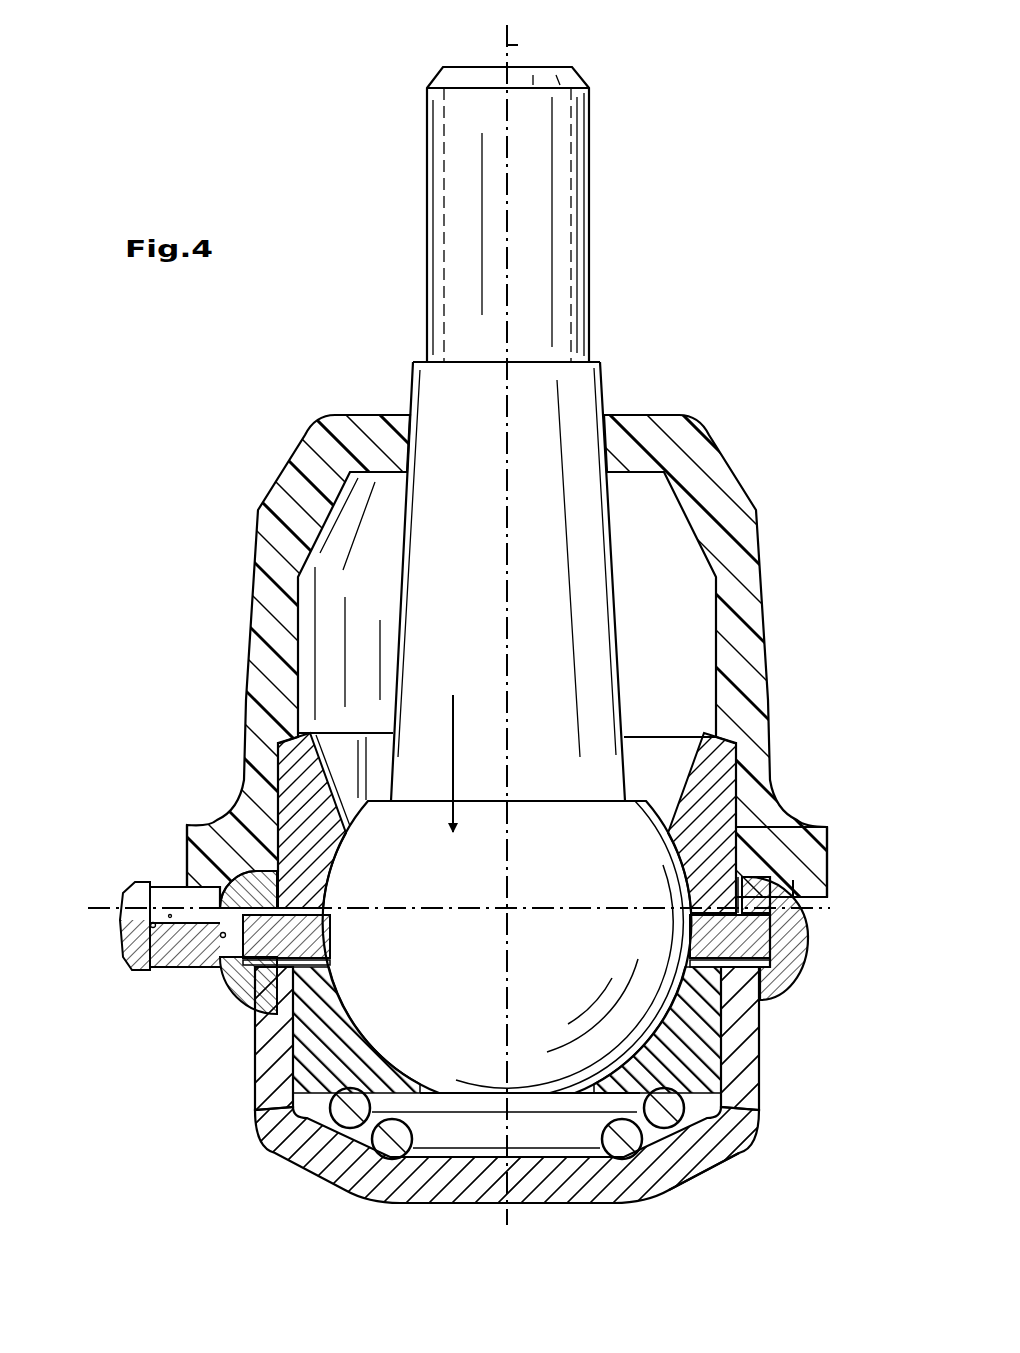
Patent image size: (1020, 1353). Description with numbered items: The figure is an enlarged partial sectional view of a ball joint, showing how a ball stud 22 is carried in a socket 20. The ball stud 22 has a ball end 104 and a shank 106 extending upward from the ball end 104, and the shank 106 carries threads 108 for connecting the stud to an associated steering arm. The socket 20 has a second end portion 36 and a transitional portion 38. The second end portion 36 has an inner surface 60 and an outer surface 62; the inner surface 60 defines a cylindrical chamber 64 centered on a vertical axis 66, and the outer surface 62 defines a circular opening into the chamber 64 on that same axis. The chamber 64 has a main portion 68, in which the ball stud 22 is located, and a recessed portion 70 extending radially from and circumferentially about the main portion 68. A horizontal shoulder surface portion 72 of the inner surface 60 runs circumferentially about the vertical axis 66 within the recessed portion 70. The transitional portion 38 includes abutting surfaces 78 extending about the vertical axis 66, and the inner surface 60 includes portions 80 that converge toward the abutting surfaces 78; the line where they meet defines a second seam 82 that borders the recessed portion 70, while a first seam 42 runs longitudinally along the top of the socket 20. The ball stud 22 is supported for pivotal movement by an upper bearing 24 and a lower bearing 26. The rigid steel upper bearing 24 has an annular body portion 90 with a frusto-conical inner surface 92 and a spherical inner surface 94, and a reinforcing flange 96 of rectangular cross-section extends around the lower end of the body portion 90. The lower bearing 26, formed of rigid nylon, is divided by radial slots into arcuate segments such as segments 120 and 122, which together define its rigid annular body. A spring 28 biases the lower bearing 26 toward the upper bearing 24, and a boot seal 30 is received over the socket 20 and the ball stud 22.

The socket 20 is at (470, 678).
The ball stud 22 is at (489, 548).
The upper bearing 24 is at (732, 748).
The lower bearing 26 is at (718, 1053).
The spring 28 is at (358, 1175).
The boot seal 30 is at (728, 512).
The second end portion 36 is at (748, 1147).
The transitional portion 38 is at (115, 948).
The first seam 42 is at (112, 871).
The inner surface 60 is at (296, 1030).
The outer surface 62 is at (763, 870).
The cylindrical chamber 64 is at (453, 748).
The vertical axis 66 is at (510, 45).
The main portion 68 is at (447, 963).
The recessed portion 70 is at (718, 941).
The horizontal shoulder surface portion 72 is at (782, 952).
The abutting surfaces 78 is at (170, 915).
The converging surface portions 80 is at (223, 933).
The second seam 82 is at (243, 935).
The annular body portion 90 is at (636, 737).
The frusto-conical inner surface 92 is at (678, 758).
The spherical inner surface 94 is at (677, 875).
The reinforcing flange 96 is at (810, 930).
The ball end 104 is at (538, 843).
The shank 106 is at (604, 390).
The threads 108 is at (583, 263).
The arcuate segment 120 is at (712, 1096).
The arcuate segment 122 is at (313, 1063).